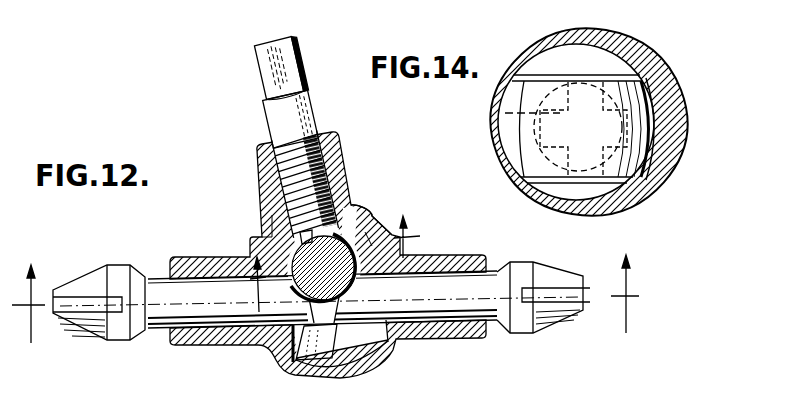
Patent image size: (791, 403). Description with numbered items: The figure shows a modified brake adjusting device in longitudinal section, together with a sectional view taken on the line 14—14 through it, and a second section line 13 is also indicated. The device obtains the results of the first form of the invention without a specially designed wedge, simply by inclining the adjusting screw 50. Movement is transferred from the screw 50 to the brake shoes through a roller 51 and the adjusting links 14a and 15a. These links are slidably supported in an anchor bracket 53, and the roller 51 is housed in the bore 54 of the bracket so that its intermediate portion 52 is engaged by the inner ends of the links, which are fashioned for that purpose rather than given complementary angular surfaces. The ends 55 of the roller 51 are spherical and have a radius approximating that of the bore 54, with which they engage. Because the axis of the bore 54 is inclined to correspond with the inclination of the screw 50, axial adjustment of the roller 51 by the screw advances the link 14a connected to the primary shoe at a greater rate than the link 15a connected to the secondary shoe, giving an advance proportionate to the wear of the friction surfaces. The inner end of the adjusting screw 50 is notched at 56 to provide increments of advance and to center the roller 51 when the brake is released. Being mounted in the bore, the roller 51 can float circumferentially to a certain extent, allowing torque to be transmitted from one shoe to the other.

In FIG. 12, the section line 13- 13 is at (329, 299).
In FIG. 12, the section line 14— 14 is at (338, 264).
In FIG. 12, the adjusting link 14a is at (428, 295).
In FIG. 12, the adjusting link 15a is at (203, 290).
In FIG. 12, the adjusting screw 50 is at (342, 165).
In FIG. 14, the adjusting screw 50 is at (540, 216).
In FIG. 12, the roller 51 is at (363, 230).
In FIG. 14, the roller 51 is at (545, 62).
In FIG. 12, the intermediate portion of the roller 52 is at (270, 235).
In FIG. 14, the intermediate portion of the roller 52 is at (527, 130).
In FIG. 12, the anchor bracket 53 is at (362, 205).
In FIG. 12, the bore 54 is at (283, 355).
In FIG. 14, the bore 54 is at (660, 100).
In FIG. 12, the ends of the roller 55 is at (323, 297).
In FIG. 14, the ends of the roller 55 is at (608, 65).
In FIG. 12, the notch 56 is at (352, 202).
In FIG. 14, the notch 56 is at (482, 108).